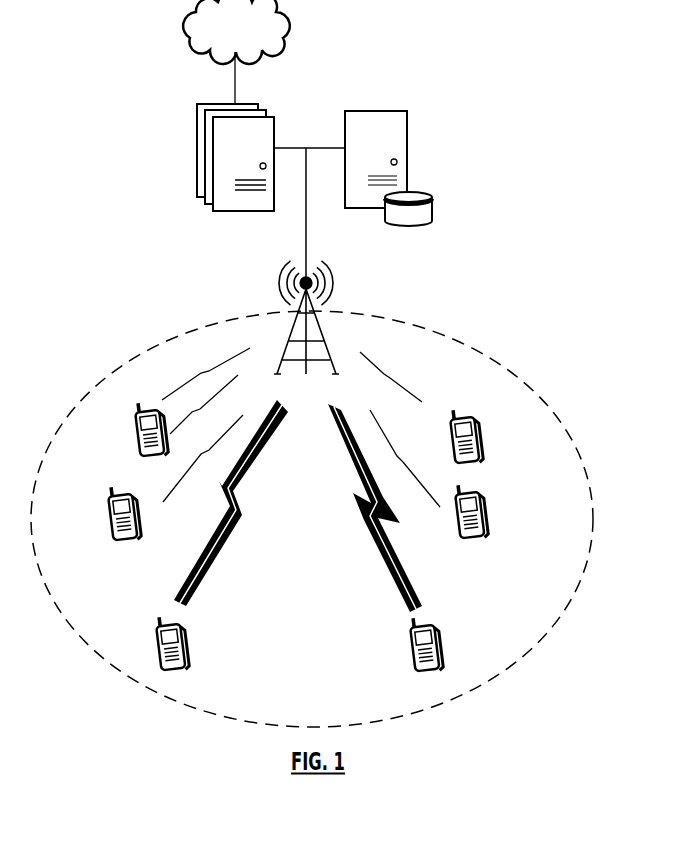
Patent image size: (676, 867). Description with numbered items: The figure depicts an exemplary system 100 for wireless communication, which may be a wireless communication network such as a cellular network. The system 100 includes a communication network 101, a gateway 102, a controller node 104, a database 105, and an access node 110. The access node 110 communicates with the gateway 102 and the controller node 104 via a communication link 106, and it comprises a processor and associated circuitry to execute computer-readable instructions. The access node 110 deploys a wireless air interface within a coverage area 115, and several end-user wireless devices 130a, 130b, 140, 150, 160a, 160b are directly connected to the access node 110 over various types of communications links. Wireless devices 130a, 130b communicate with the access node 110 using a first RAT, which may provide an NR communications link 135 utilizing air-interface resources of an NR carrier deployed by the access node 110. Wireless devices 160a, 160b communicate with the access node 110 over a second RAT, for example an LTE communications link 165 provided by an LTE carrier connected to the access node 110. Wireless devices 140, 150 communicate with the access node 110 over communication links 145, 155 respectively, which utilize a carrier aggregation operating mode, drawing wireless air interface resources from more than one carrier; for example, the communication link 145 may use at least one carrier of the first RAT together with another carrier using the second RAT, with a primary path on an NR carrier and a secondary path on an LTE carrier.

The system 100 is at (340, 51).
The communication network 101 is at (221, 31).
The gateway 102 is at (197, 109).
The controller node 104 is at (407, 111).
The database 105 is at (429, 192).
The communication link 106 is at (306, 226).
The access node 110 is at (290, 340).
The coverage area 115 is at (368, 315).
The end-user wireless device 130a is at (132, 447).
The end-user wireless device 130b is at (120, 547).
The NR communications link 135 is at (185, 380).
The end-user wireless device 140 is at (153, 660).
The communication link 145 is at (251, 490).
The end-user wireless device 150 is at (438, 667).
The communication link 155 is at (370, 530).
The end-user wireless device 160a is at (478, 457).
The end-user wireless device 160b is at (483, 535).
The LTE communications link 165 is at (388, 373).